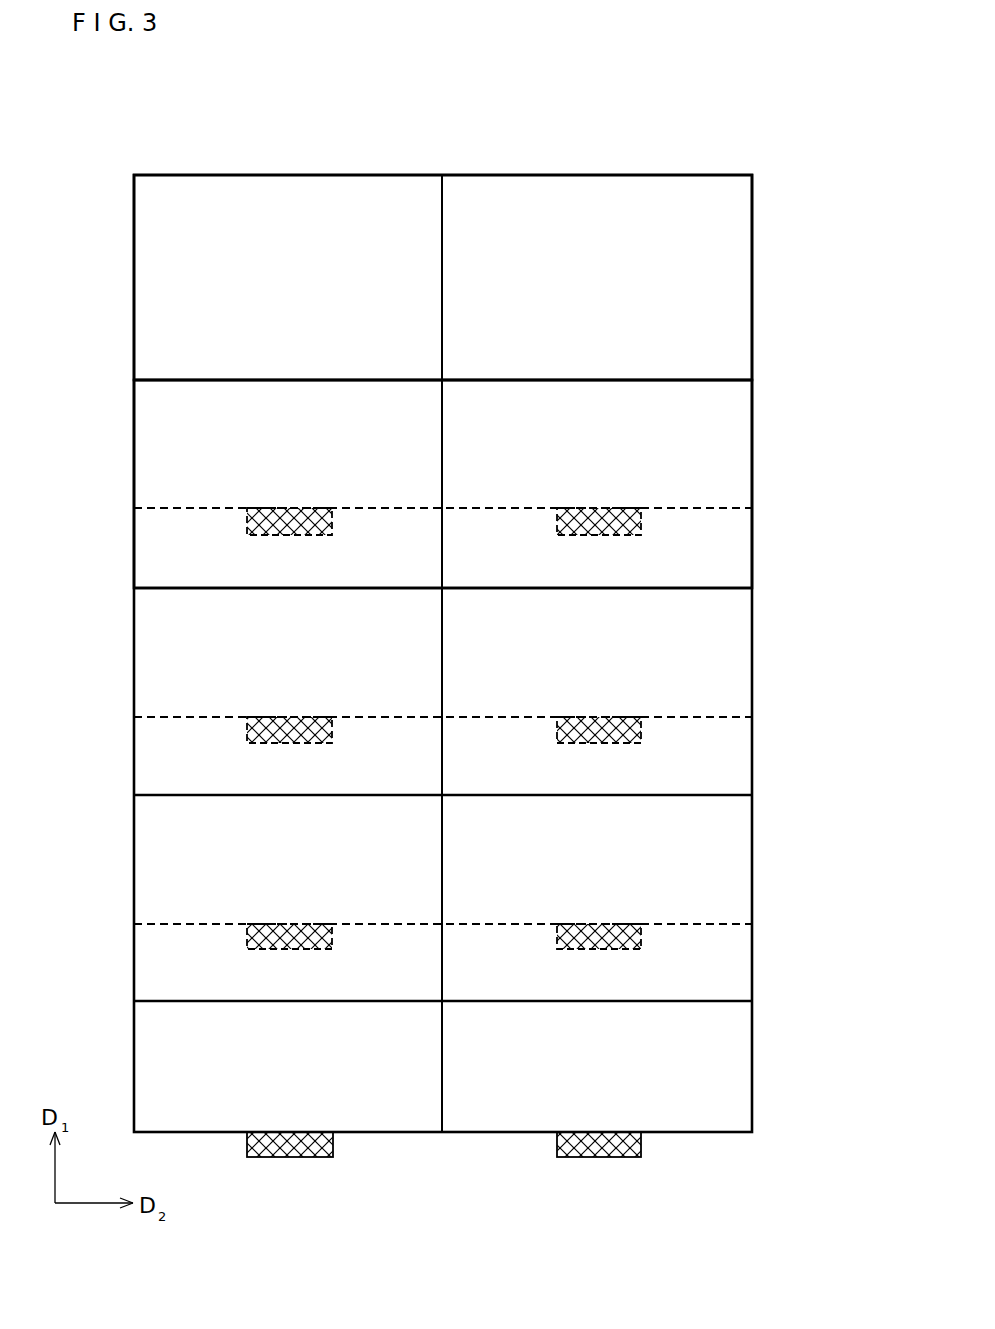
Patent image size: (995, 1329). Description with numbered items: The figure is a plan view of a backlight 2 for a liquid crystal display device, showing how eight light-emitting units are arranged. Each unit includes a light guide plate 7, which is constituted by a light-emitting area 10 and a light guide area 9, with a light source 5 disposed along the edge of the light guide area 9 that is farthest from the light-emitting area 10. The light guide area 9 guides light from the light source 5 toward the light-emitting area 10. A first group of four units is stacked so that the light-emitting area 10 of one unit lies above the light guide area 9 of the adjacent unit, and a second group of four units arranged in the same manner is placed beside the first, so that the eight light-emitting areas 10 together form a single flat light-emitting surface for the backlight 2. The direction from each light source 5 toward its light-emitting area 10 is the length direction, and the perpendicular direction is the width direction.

The backlight 2 is at (640, 118).
The light guide plate 7 is at (78, 175).
The light-emitting area 10 is at (185, 265).
The light guide area 9 is at (185, 445).
The light source 5 is at (247, 524).